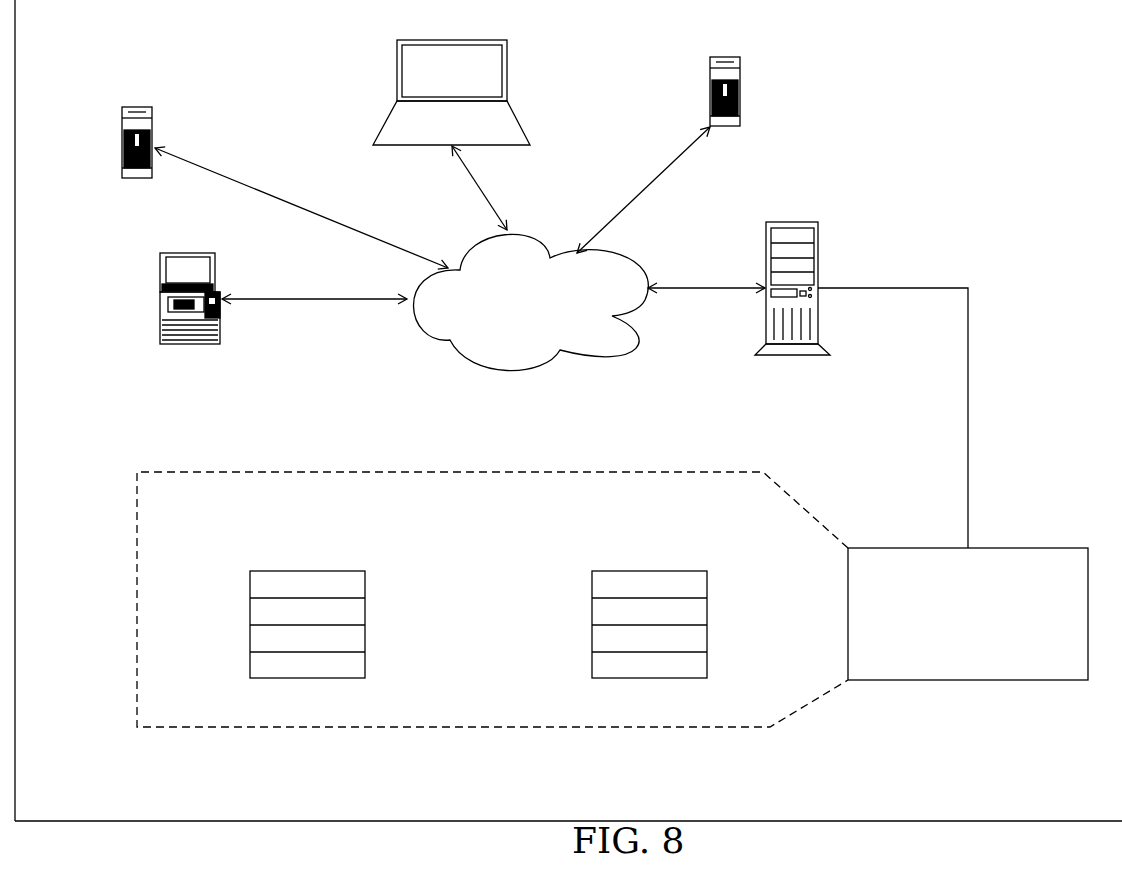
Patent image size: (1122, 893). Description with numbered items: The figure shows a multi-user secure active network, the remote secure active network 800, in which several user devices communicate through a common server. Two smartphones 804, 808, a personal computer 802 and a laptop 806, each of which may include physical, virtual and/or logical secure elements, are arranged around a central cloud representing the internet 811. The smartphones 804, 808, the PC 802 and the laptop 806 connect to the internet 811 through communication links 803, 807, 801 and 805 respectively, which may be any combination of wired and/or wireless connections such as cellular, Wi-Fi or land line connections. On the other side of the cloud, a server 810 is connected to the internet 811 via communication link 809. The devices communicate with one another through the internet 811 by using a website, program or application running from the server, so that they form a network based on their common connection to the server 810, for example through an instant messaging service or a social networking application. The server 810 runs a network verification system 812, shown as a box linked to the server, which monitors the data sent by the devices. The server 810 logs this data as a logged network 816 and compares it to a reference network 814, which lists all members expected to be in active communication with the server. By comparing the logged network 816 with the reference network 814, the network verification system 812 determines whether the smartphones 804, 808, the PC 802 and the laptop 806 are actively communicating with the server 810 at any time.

The remote secure active network 800 is at (976, 54).
The communication link 801 is at (310, 300).
The personal computer 802 is at (159, 298).
The communication link 803 is at (305, 208).
The smartphone 804 is at (121, 142).
The communication link 805 is at (485, 182).
The laptop 806 is at (508, 70).
The communication link 807 is at (655, 183).
The smartphone 808 is at (742, 90).
The communication link 809 is at (702, 290).
The server 810 is at (802, 222).
The internet 811 is at (505, 368).
The network verification system 812 is at (965, 680).
The reference network 814 is at (310, 571).
The logged network 816 is at (655, 571).